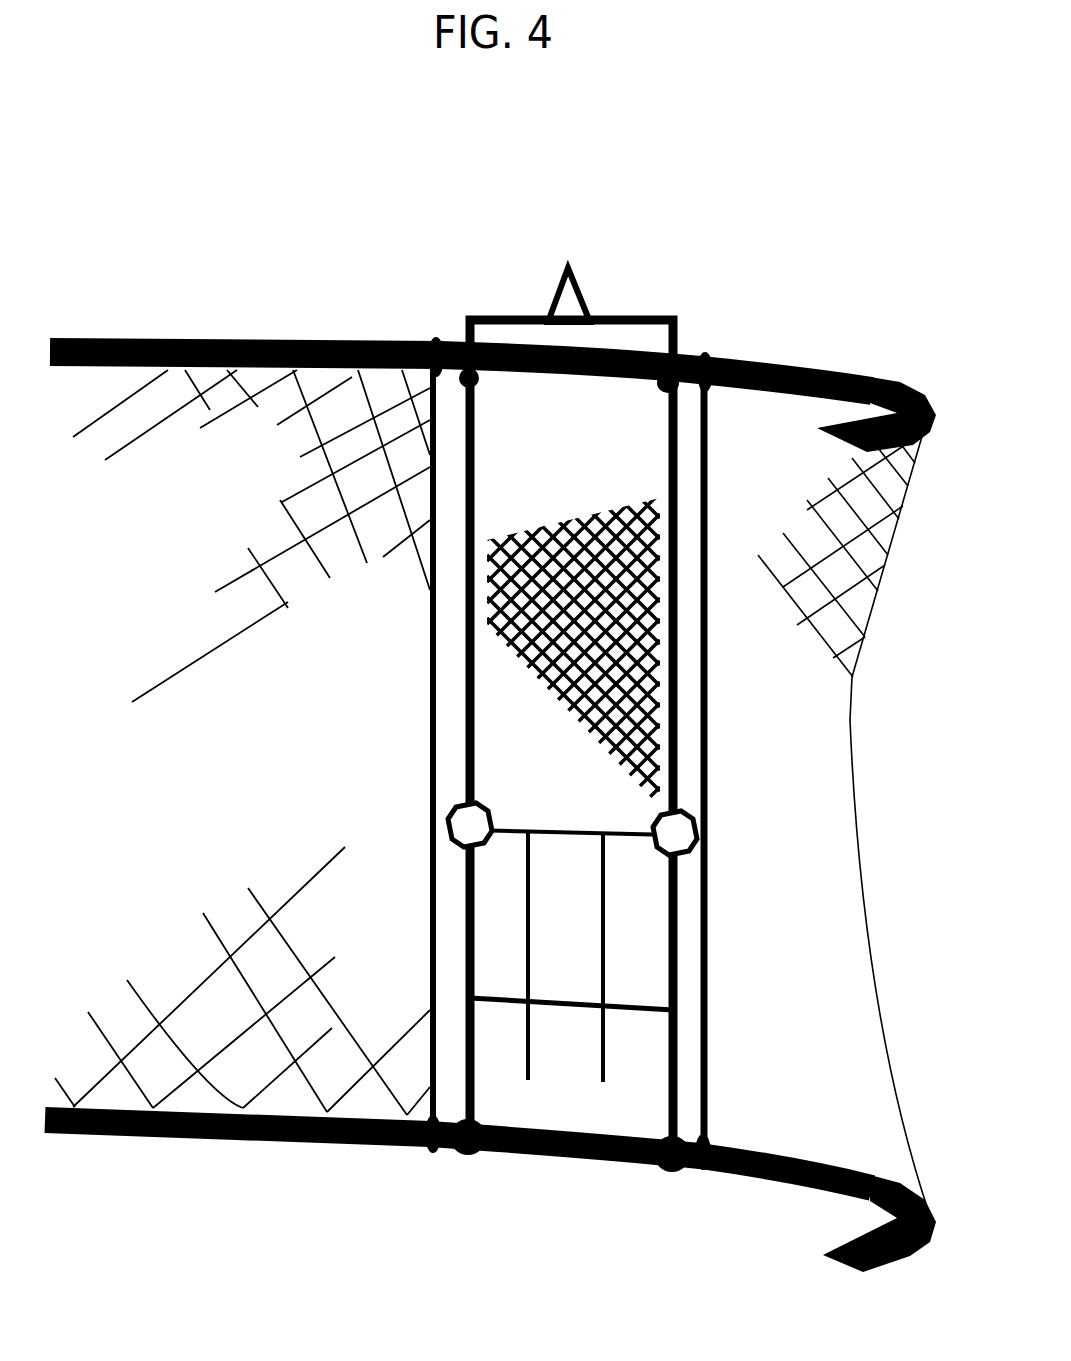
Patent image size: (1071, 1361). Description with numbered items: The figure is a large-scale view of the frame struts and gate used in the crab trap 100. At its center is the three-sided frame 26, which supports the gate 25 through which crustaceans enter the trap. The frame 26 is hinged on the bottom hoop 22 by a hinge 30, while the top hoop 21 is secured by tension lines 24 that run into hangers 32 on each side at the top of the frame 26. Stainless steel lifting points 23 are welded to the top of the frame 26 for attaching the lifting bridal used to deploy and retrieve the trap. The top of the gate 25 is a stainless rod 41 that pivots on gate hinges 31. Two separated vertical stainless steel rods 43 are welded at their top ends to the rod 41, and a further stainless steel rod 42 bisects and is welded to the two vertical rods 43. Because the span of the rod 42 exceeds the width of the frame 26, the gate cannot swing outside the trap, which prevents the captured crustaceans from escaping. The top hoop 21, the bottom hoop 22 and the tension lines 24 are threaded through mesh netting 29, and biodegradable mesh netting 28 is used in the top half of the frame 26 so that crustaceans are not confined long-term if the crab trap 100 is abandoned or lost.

The crab trap 100 is at (523, 152).
The top hoop 21 is at (240, 337).
The bottom hoop 22 is at (313, 1147).
The lifting points 23 is at (588, 297).
The tension lines 24 is at (428, 642).
The gate 25 is at (608, 952).
The frame 26 is at (677, 1020).
The biodegradable mesh netting 28 is at (551, 600).
The mesh netting 29 is at (258, 470).
The hinge 30 is at (668, 1178).
The gate hinges 31 is at (697, 838).
The hangers 32 is at (657, 388).
The stainless rod 41 is at (563, 825).
The stainless steel rod 42 is at (573, 997).
The vertical stainless steel rods 43 is at (517, 1045).